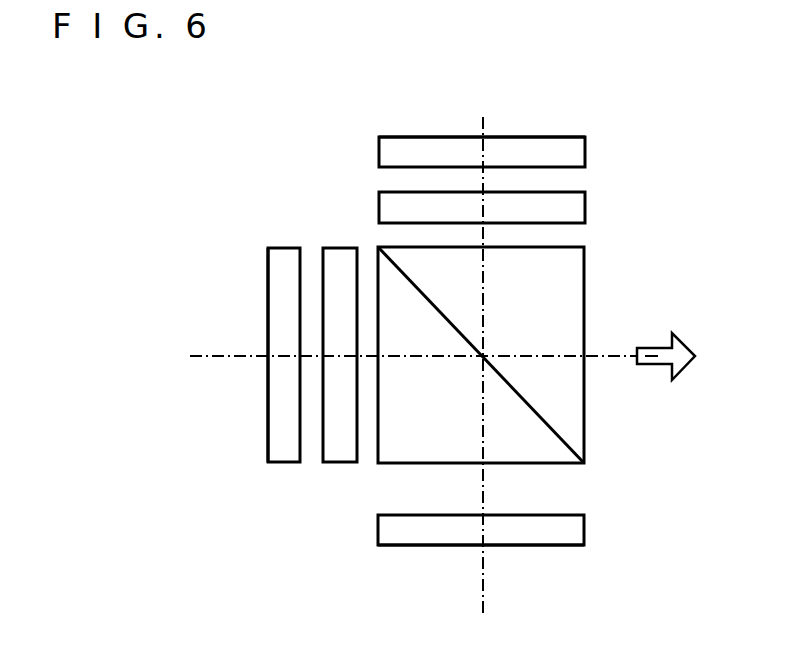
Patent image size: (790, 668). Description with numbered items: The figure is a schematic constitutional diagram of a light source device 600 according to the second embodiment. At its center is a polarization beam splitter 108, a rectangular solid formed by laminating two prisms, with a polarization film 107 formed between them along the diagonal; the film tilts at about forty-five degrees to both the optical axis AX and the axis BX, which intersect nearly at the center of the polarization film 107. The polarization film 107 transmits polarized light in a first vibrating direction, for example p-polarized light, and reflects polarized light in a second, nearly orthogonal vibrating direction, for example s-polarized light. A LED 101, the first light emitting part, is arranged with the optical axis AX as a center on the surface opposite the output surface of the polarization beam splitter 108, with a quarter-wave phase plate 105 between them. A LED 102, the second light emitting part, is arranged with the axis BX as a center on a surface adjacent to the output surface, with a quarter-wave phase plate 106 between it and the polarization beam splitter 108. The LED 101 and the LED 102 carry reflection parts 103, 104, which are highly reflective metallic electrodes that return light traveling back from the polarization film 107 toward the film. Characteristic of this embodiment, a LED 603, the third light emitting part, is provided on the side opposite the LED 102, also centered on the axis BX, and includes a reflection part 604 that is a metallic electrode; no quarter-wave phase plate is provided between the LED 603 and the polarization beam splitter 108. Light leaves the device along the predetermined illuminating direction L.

The light source device 600 is at (593, 110).
The LED 101 is at (287, 255).
The LED 102 is at (579, 150).
The reflection part 103 is at (274, 428).
The reflection part 104 is at (406, 139).
The λ/4 phase plate 105 is at (343, 255).
The λ/4 phase plate 106 is at (579, 205).
The polarization film 107 is at (568, 444).
The polarization beam splitter 108 is at (579, 272).
The LED 603 is at (576, 527).
The reflection part 604 is at (401, 545).
The optical axis AX is at (213, 351).
The axis BX is at (484, 597).
The illuminating direction L is at (656, 346).